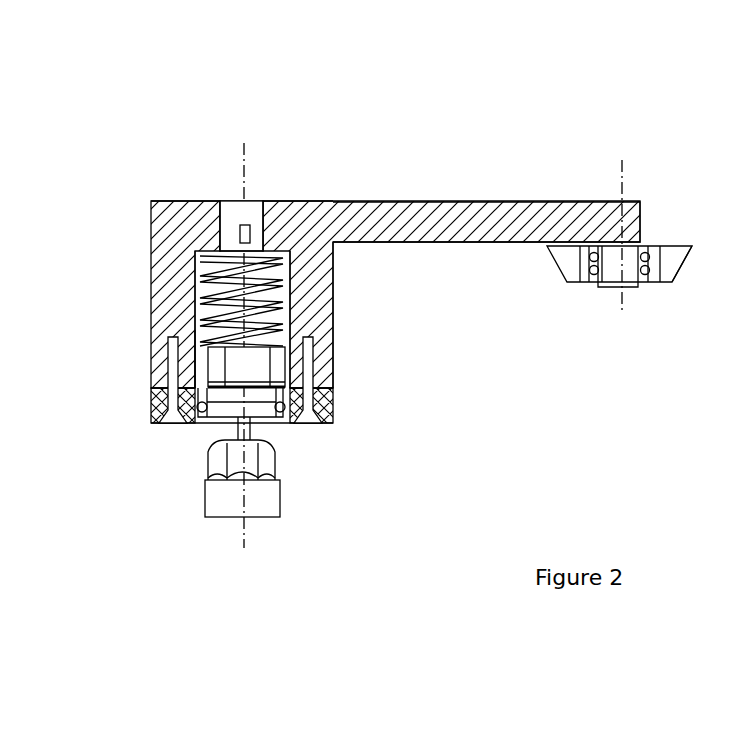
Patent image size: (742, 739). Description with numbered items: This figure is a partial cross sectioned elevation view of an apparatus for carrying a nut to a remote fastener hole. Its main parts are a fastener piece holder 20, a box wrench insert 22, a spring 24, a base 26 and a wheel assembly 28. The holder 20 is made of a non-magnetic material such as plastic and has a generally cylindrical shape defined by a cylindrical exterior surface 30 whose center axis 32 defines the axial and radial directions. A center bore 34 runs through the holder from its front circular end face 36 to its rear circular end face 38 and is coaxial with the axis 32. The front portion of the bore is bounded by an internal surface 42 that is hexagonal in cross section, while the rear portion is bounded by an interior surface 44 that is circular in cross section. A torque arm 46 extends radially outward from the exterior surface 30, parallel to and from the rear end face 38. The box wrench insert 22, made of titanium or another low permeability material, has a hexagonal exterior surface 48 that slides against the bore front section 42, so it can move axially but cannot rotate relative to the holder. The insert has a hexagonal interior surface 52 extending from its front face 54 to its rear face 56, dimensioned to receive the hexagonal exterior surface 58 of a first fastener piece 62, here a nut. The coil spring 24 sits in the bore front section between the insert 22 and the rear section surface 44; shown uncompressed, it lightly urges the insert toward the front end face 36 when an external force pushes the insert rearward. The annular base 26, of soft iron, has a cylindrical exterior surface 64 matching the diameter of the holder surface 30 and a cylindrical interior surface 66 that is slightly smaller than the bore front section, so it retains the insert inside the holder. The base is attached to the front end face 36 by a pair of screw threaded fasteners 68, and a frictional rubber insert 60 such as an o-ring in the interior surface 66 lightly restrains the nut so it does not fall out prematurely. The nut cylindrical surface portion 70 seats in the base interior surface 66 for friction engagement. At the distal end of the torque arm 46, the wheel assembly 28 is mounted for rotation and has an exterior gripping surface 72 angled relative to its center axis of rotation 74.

The fastener piece holder 20 is at (318, 192).
The box wrench insert 22 is at (197, 347).
The spring 24 is at (200, 278).
The base 26 is at (155, 400).
The wheel assembly 28 is at (678, 270).
The cylindrical exterior surface 30 is at (334, 292).
The center axis 32 is at (243, 157).
The center bore 34 is at (258, 191).
The front end face 36 is at (331, 392).
The rear end face 38 is at (163, 200).
The bore front section internal surface 42 is at (198, 293).
The bore rear section interior surface 44 is at (233, 204).
The torque arm 46 is at (477, 200).
The insert exterior surface 48 is at (292, 352).
The insert interior surface 52 is at (168, 372).
The insert front face 54 is at (285, 420).
The insert rear face 56 is at (292, 325).
The hexagonal exterior surface of the nut 58 is at (210, 458).
The frictional rubber insert 60 is at (160, 413).
The first fastener piece 62 is at (213, 496).
The base cylindrical exterior surface 64 is at (334, 420).
The base cylindrical interior surface 66 is at (201, 413).
The screw threaded fasteners 68 is at (170, 425).
The nut cylindrical surface portion 70 is at (274, 505).
The exterior gripping surface 72 is at (684, 266).
The center axis of rotation 74 is at (623, 172).